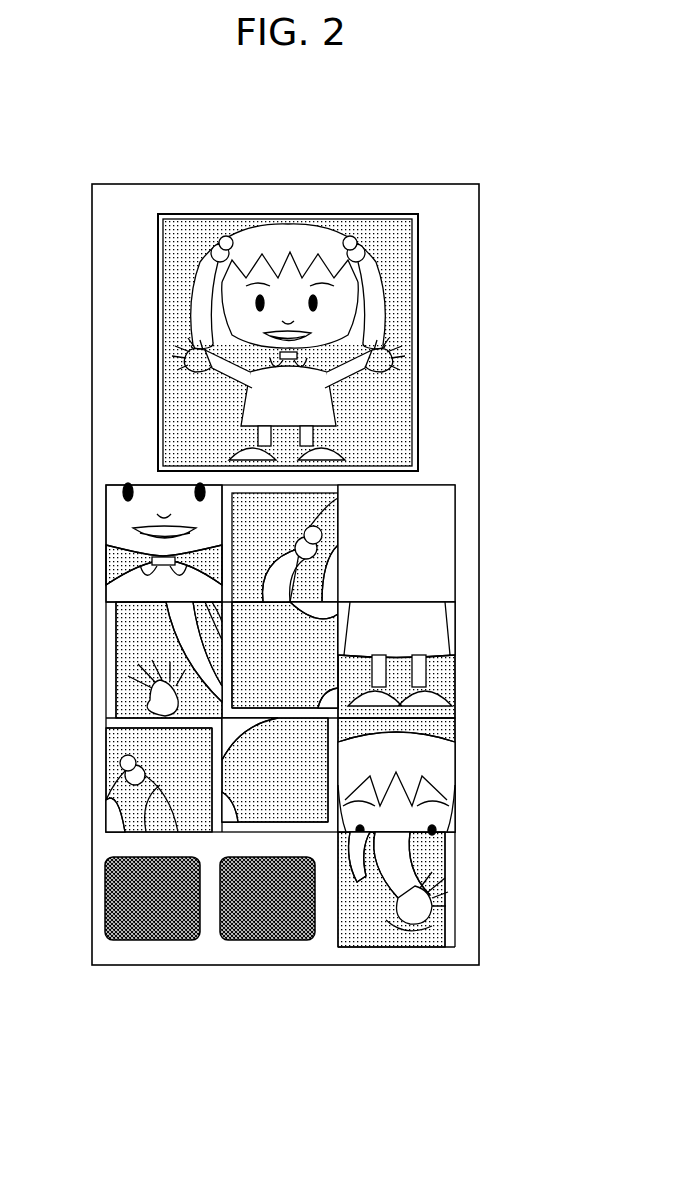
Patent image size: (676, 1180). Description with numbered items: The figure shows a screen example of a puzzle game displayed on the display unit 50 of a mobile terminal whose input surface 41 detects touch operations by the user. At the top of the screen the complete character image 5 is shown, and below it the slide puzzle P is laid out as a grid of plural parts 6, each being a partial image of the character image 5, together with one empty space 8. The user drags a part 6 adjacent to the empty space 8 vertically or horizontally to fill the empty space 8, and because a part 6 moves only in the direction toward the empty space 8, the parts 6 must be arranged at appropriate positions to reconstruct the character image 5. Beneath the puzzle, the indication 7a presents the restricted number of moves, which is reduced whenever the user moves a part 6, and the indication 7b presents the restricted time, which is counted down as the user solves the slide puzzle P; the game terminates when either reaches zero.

The input surface 41 is at (285, 547).
The display unit 50 is at (344, 184).
The character image 5 is at (415, 342).
The part 6 is at (112, 560).
The empty space 8 is at (426, 543).
The restricted number of moves indication 7a is at (150, 940).
The restricted time indication 7b is at (262, 940).
The slide puzzle P is at (306, 718).